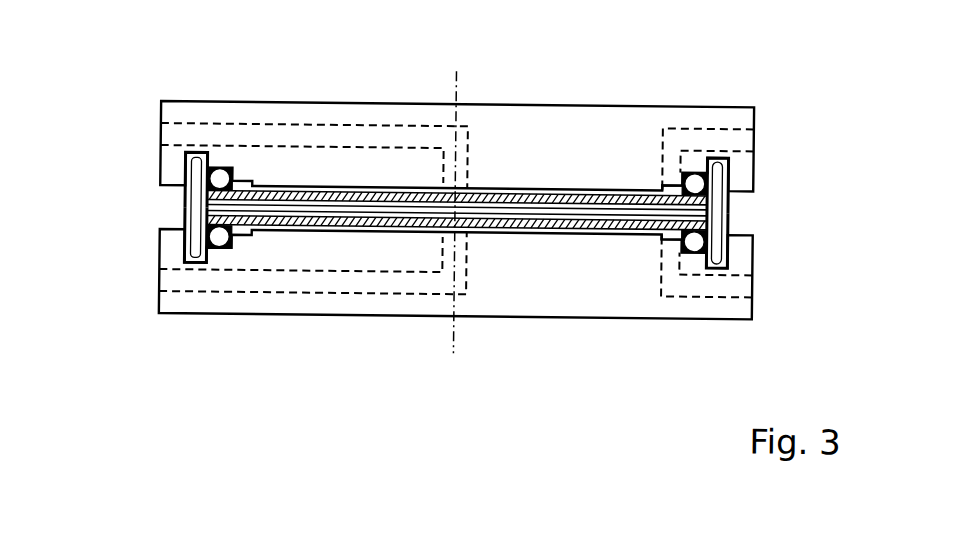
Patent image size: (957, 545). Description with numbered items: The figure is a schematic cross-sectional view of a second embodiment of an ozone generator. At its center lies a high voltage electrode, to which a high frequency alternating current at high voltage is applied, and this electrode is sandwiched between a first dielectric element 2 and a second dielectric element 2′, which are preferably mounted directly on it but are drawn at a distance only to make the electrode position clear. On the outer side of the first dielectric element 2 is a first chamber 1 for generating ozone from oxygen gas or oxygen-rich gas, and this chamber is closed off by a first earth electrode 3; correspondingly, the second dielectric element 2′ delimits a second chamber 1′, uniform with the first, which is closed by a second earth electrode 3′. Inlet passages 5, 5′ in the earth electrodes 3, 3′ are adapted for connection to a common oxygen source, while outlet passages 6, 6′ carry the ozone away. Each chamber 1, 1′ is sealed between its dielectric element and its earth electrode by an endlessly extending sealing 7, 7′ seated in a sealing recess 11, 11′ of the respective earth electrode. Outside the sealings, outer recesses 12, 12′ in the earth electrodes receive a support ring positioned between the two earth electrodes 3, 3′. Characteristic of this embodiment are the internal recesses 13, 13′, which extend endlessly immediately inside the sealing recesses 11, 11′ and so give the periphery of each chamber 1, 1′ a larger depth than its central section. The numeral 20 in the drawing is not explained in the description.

The first chamber 1 is at (541, 187).
The second chamber 1′ is at (540, 229).
The first dielectric element 2 is at (490, 189).
The second dielectric element 2′ is at (492, 230).
The first earth electrode 3 is at (608, 112).
The second earth electrode 3′ is at (606, 298).
The inlet passage 5 is at (753, 133).
The inlet passage 5′ is at (753, 281).
The outlet passage 6 is at (172, 134).
The outlet passage 6′ is at (170, 282).
The sealing 7 is at (698, 178).
The sealing 7′ is at (698, 236).
The sealing recess 11 is at (230, 168).
The sealing recess 11′ is at (225, 249).
The outer recess 12 is at (200, 152).
The outer recess 12′ is at (202, 264).
The internal recess 13 is at (662, 178).
The internal recess 13′ is at (662, 238).
The end plate 20 is at (195, 210).